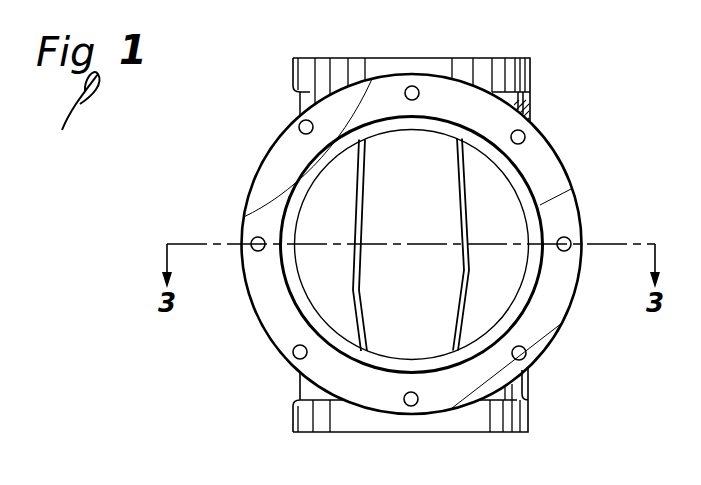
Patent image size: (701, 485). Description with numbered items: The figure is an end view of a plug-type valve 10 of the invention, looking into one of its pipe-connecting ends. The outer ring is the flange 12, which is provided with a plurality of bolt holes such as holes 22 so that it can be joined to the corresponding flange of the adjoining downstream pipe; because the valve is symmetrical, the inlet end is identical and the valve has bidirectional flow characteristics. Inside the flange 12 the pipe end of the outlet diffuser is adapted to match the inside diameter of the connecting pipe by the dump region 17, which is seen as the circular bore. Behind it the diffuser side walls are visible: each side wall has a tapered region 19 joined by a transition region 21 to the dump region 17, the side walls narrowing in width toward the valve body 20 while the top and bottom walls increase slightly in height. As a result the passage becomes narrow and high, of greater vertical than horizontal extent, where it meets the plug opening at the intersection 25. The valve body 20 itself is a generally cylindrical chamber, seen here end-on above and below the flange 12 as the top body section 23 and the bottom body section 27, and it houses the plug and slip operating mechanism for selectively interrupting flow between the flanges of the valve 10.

The valve 10 is at (240, 168).
The flange 12 is at (250, 200).
The dump region 17 is at (336, 232).
The tapered region 19 is at (362, 183).
The valve body 20 is at (300, 101).
The transition region 21 is at (360, 286).
The bolt holes 22 is at (259, 252).
The top body section 23 is at (344, 36).
The intersection 25 is at (461, 270).
The bottom body section 27 is at (356, 432).